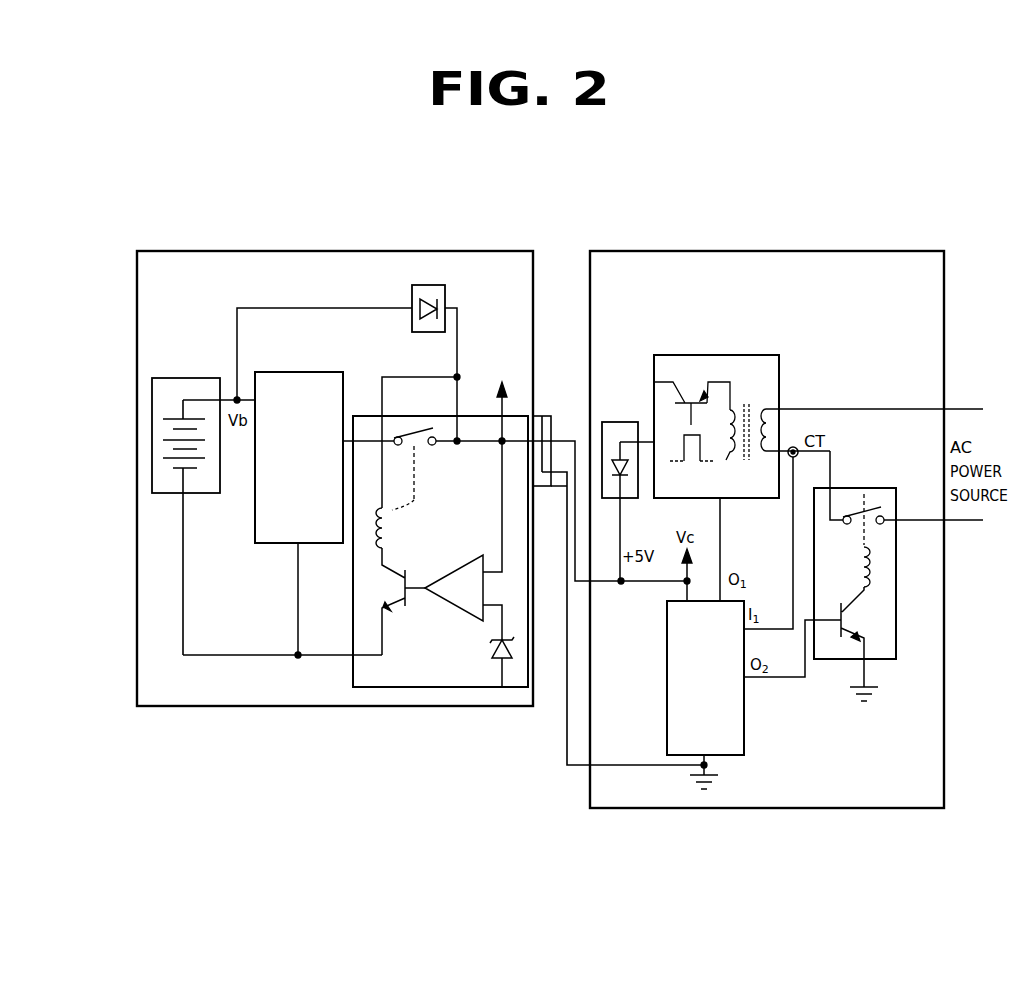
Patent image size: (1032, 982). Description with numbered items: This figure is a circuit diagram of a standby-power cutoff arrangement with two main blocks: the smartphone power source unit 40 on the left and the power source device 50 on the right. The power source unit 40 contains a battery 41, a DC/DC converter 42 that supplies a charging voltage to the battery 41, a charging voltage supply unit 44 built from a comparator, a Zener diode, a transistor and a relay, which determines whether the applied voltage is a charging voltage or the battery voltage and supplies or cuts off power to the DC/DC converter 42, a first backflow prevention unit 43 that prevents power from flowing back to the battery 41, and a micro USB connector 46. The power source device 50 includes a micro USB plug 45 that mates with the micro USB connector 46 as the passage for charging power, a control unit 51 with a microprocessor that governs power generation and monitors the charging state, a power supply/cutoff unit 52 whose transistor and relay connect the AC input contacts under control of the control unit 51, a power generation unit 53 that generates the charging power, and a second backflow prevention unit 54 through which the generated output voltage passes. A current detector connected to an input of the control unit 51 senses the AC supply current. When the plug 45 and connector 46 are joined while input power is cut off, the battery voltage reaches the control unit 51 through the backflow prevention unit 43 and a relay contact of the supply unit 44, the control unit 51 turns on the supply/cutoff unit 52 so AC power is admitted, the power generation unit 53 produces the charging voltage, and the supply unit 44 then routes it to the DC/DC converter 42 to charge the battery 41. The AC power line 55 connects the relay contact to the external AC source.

The power source unit 40 is at (328, 251).
The battery 41 is at (192, 378).
The DC/DC converter 42 is at (304, 372).
The first backflow prevention unit 43 is at (412, 297).
The charging voltage supply unit 44 is at (368, 416).
The micro USB plug 45 is at (547, 416).
The micro USB connector 46 is at (542, 487).
The power source device 50 is at (755, 251).
The control unit 51 is at (667, 677).
The power supply/cutoff unit 52 is at (851, 487).
The power generation unit 53 is at (718, 355).
The second backflow prevention unit 54 is at (621, 422).
The AC power line 55 is at (889, 510).